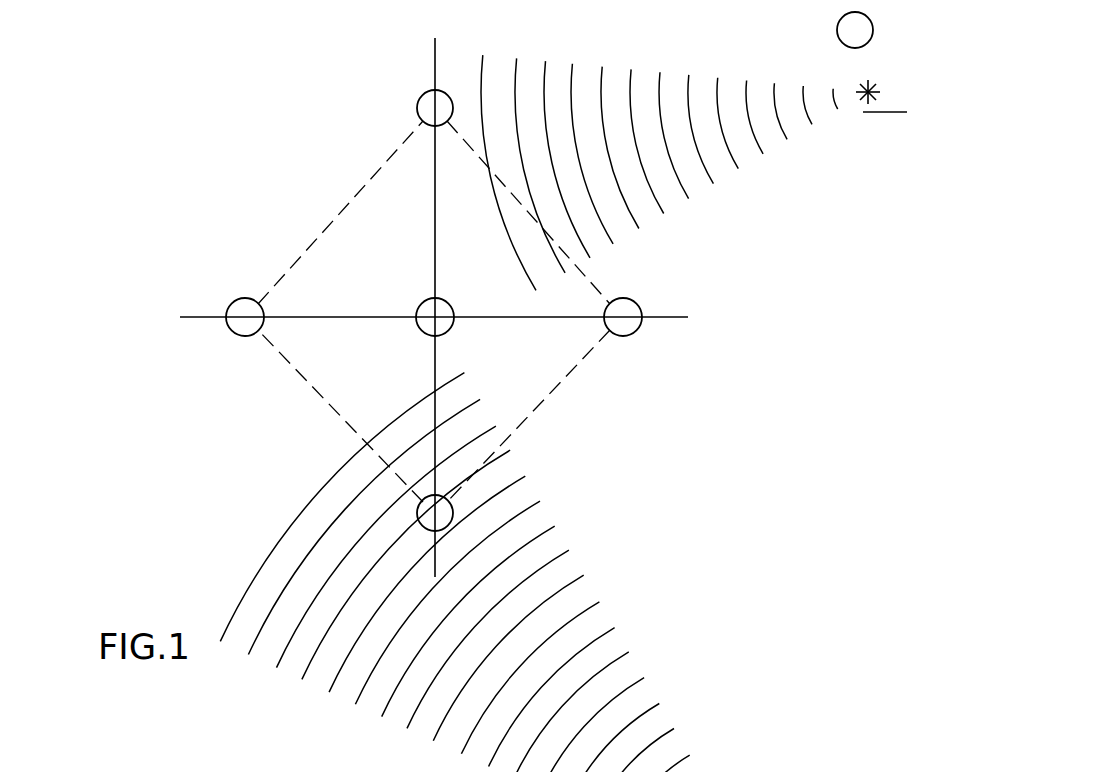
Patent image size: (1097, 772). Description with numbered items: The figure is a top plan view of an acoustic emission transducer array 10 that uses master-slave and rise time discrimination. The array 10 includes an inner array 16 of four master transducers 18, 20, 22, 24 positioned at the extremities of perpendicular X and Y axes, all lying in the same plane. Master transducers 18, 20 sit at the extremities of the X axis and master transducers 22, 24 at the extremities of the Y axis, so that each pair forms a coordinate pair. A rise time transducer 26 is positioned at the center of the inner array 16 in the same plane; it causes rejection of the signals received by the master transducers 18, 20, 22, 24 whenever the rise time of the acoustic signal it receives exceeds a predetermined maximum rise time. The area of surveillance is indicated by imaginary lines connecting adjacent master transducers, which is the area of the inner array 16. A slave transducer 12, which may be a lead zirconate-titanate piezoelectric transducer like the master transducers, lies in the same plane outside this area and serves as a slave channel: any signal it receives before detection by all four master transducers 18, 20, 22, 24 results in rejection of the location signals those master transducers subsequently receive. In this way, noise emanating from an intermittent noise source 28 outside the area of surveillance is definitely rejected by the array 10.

The transducer array 10 is at (250, 133).
The slave transducer 12 is at (873, 32).
The inner array 16 is at (582, 388).
The master transducer 18 is at (640, 302).
The master transducer 20 is at (233, 332).
The master transducer 22 is at (418, 101).
The master transducer 24 is at (455, 516).
The rise time transducer 26 is at (421, 303).
The intermittent noise source 28 is at (700, 172).